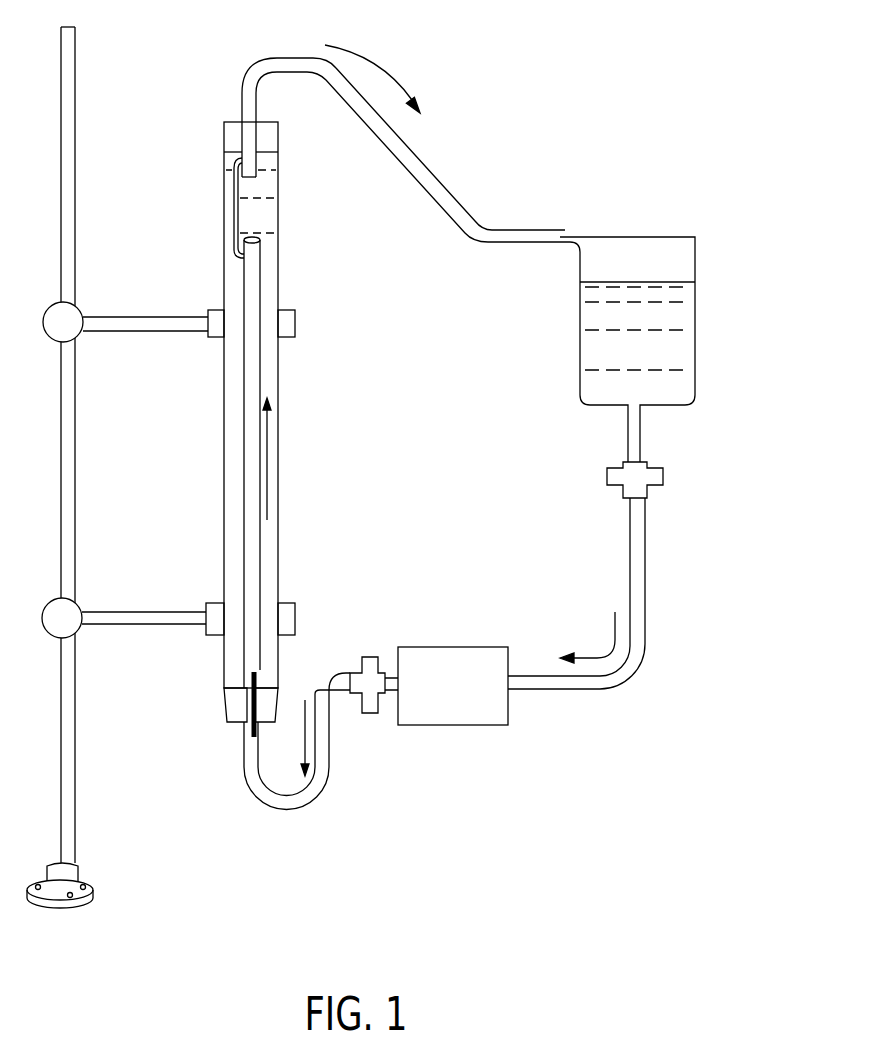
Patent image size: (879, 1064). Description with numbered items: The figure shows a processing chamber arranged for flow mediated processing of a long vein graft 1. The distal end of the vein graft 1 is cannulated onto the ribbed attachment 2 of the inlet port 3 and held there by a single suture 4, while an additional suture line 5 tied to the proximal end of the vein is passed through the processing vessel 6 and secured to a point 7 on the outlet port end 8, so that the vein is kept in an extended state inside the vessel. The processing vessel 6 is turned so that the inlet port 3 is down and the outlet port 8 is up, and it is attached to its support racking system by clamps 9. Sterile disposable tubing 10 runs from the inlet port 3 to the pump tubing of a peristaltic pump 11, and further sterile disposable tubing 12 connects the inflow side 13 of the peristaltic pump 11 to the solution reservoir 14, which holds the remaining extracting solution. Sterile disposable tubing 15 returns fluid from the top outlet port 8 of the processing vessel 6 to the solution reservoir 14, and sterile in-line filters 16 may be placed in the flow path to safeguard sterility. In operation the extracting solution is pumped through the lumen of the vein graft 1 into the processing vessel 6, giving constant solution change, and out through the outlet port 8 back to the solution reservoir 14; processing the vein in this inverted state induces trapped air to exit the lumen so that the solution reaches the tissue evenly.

The vein graft 1 is at (247, 380).
The ribbed attachment 2 is at (282, 710).
The inlet port 3 is at (228, 740).
The suture 4 is at (255, 682).
The suture line 5 is at (233, 203).
The processing vessel 6 is at (288, 470).
The securing point 7 is at (232, 160).
The outlet port 8 is at (212, 108).
The clamps 9 is at (138, 335).
The sterile disposable tubing 10 is at (328, 773).
The peristaltic pump 11 is at (455, 750).
The sterile disposable tubing 12 is at (647, 633).
The inflow side 13 is at (515, 692).
The solution reservoir 14 is at (568, 330).
The sterile disposable tubing 15 is at (512, 228).
The in-line filters 16 is at (370, 640).